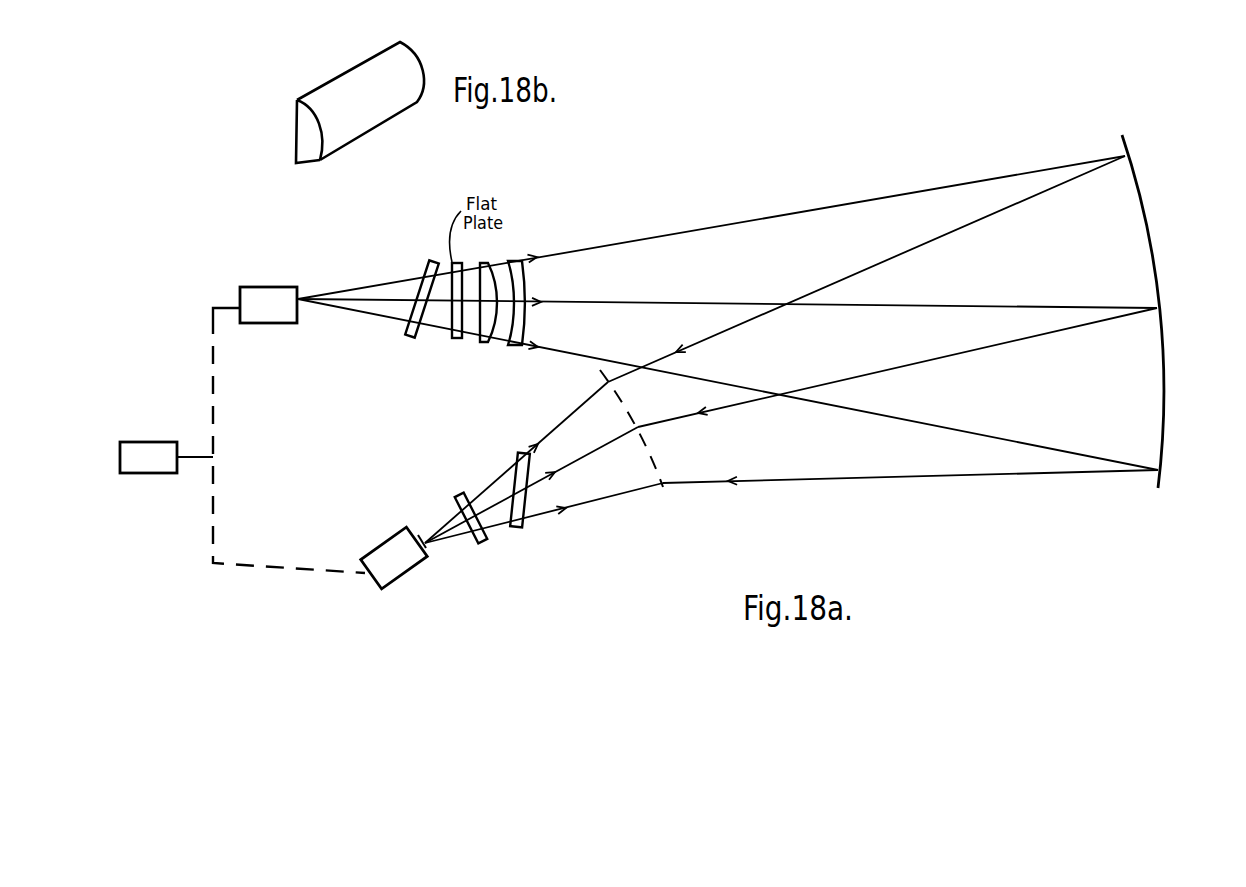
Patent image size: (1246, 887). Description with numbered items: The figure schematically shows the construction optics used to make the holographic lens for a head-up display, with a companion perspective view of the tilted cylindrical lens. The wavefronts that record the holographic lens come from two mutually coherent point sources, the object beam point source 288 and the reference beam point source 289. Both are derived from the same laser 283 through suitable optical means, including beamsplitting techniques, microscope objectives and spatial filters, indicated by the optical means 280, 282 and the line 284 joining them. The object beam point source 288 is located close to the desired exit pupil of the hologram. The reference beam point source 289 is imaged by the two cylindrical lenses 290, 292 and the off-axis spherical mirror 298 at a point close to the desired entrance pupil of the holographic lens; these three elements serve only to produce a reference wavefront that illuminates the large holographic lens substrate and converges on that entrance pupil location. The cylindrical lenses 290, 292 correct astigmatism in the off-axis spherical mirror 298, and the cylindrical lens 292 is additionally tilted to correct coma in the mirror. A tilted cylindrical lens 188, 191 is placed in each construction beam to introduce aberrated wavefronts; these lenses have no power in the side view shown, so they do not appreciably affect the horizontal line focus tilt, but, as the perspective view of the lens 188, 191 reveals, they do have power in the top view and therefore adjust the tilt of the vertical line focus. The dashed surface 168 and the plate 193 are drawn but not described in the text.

In FIG. 18A, the image surface 168 is at (617, 392).
In FIG. 18B, the tilted cylindrical lens 188 is at (307, 93).
In FIG. 18A, the tilted cylindrical lens 188 is at (527, 528).
In FIG. 18B, the tilted cylindrical lens 191 is at (341, 101).
In FIG. 18A, the tilted cylindrical lens 191 is at (405, 332).
In FIG. 18A, the cylindrical lens 193 is at (483, 543).
In FIG. 18A, the optical means 280 is at (262, 323).
In FIG. 18A, the optical means 282 is at (397, 584).
In FIG. 18A, the laser 283 is at (142, 440).
In FIG. 18A, the line joining 280 and 282 284 is at (213, 532).
In FIG. 18A, the object beam point source 288 is at (427, 547).
In FIG. 18A, the reference beam point source 289 is at (300, 297).
In FIG. 18A, the cylindrical lens 290 is at (482, 344).
In FIG. 18A, the cylindrical lens 292 is at (518, 346).
In FIG. 18A, the off-axis spherical mirror 298 is at (1157, 267).